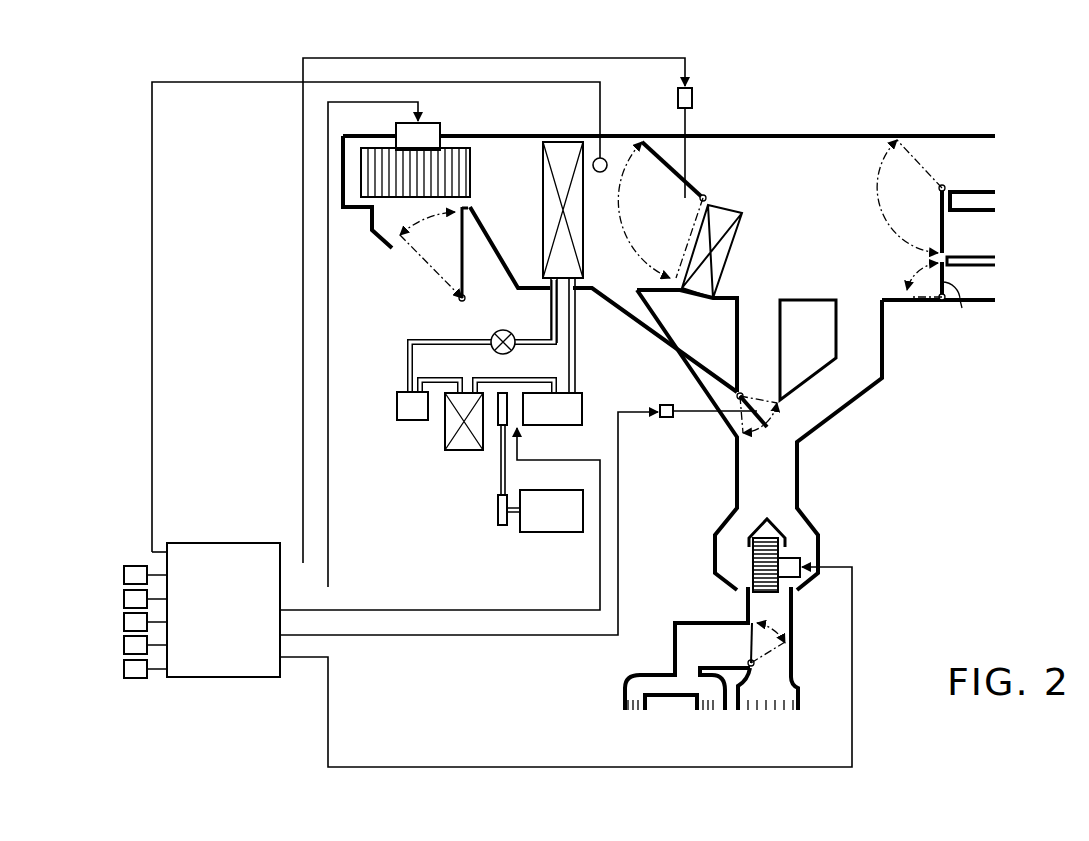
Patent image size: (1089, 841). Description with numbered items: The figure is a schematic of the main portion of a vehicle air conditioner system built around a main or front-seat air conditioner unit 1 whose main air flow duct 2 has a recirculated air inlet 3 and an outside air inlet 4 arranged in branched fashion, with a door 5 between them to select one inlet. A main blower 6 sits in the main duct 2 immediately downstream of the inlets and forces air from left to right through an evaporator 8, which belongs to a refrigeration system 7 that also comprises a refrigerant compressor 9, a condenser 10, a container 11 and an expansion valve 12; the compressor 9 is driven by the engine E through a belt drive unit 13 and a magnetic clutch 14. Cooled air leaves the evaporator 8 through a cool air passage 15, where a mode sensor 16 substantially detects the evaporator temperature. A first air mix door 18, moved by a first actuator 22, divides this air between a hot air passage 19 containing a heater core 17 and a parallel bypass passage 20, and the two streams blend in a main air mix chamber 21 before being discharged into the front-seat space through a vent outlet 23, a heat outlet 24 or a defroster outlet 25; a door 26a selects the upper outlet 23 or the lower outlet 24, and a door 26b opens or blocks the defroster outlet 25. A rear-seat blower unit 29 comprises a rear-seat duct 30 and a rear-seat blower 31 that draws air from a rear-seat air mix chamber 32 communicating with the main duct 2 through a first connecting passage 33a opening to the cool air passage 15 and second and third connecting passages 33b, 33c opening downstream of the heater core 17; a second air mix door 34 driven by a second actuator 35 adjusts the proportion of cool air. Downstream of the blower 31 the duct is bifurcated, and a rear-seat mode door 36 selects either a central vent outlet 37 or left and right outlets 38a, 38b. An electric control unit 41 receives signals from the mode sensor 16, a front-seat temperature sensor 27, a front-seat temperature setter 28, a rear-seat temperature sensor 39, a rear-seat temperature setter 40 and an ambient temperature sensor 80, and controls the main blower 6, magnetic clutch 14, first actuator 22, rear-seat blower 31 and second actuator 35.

The main air conditioner unit 1 is at (889, 133).
The main air flow duct 2 is at (815, 137).
The recirculated air inlet 3 is at (420, 270).
The outside air inlet 4 is at (466, 242).
The door 5 is at (465, 290).
The main blower 6 is at (438, 125).
The refrigeration system 7 is at (403, 360).
The evaporator 8 is at (556, 136).
The refrigerant compressor 9 is at (583, 408).
The condenser 10 is at (450, 433).
The container 11 is at (400, 408).
The expansion valve 12 is at (502, 330).
The belt drive unit 13 is at (500, 472).
The magnetic clutch 14 is at (520, 413).
The cool air passage 15 is at (598, 292).
The mode sensor 16 is at (605, 159).
The heater core 17 is at (690, 294).
The first air mix door 18 is at (660, 150).
The hot air passage 19 is at (740, 255).
The bypass passage 20 is at (730, 173).
The main air mix chamber 21 is at (848, 180).
The first actuator 22 is at (693, 106).
The vent outlet 23 is at (983, 165).
The heat outlet 24 is at (970, 225).
The defroster outlet 25 is at (977, 282).
The door 26a is at (945, 243).
The door 26b is at (952, 298).
The front-seat temperature sensor 27 is at (123, 573).
The front-seat temperature setter 28 is at (123, 599).
The heater chamber 29 is at (712, 567).
The rear-seat duct 30 is at (820, 548).
The rear-seat blower 31 is at (753, 558).
The rear-seat air mix chamber 32 is at (803, 442).
The first connecting passage 33a is at (643, 323).
The second connecting passage 33b is at (765, 367).
The third connecting passage 33c is at (870, 350).
The second air mix door 34 is at (737, 417).
The second actuator 35 is at (667, 417).
The rear-seat mode door 36 is at (750, 640).
The central vent outlet 37 is at (772, 712).
The left outlet 38a is at (638, 711).
The right outlet 38b is at (708, 712).
The rear-seat temperature sensor 39 is at (123, 623).
The rear-seat temperature setter 40 is at (123, 646).
The electric control unit 41 is at (215, 546).
The ambient temperature sensor 80 is at (123, 669).